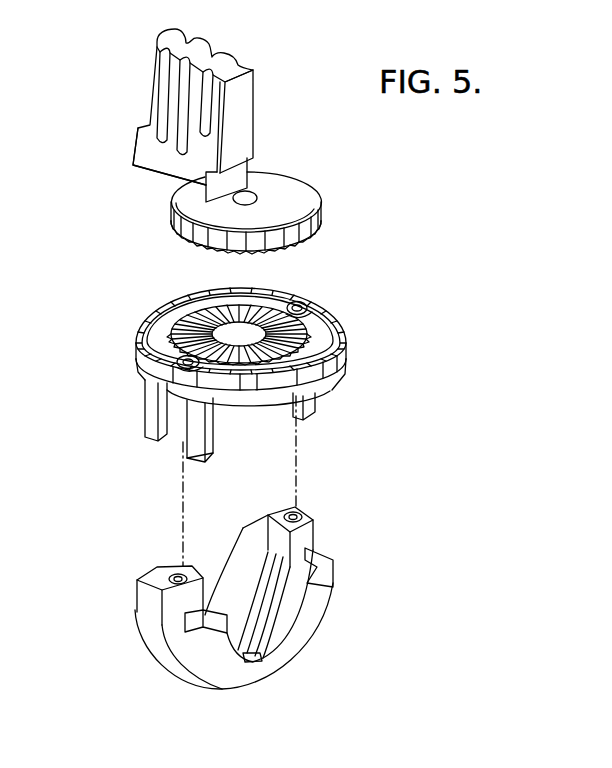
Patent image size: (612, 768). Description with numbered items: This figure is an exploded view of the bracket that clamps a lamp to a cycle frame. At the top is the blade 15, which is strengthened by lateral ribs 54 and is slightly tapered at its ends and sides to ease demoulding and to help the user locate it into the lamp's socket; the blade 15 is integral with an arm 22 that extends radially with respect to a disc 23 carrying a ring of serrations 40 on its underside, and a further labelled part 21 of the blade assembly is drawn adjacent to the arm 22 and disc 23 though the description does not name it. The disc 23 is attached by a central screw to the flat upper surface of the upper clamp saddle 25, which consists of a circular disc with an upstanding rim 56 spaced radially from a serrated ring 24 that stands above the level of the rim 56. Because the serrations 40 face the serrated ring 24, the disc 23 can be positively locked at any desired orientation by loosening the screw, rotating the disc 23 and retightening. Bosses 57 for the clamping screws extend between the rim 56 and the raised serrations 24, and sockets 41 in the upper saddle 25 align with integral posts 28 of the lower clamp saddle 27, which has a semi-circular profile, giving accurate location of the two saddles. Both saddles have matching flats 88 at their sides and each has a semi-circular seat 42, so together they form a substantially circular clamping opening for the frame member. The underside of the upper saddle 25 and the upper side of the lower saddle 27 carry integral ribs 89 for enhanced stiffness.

The blade 15 is at (215, 115).
The lateral ribs 54 is at (152, 77).
The arm 22 is at (157, 163).
The foot of key 21 is at (253, 160).
The disc 23 is at (278, 199).
The ring of serrations 40 is at (303, 247).
The upper clamp saddle 25 is at (254, 375).
The upstanding rim 56 is at (136, 330).
The serrated ring 24 is at (240, 302).
The bosses 57 is at (303, 300).
The sockets 41 is at (178, 437).
The semi-circular seat 42 is at (257, 405).
The flats 88 is at (218, 443).
The lower clamp saddle 27 is at (249, 571).
The posts 28 is at (307, 532).
The ribs 89 is at (277, 603).